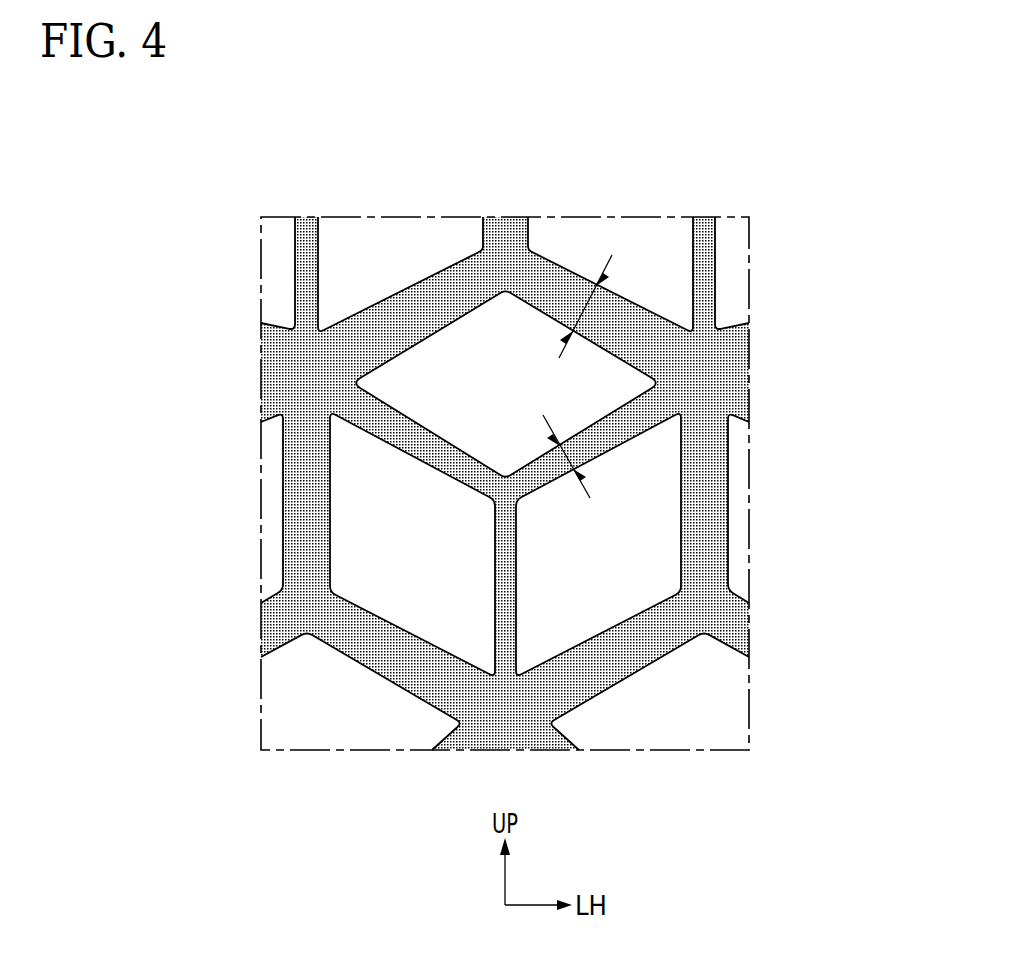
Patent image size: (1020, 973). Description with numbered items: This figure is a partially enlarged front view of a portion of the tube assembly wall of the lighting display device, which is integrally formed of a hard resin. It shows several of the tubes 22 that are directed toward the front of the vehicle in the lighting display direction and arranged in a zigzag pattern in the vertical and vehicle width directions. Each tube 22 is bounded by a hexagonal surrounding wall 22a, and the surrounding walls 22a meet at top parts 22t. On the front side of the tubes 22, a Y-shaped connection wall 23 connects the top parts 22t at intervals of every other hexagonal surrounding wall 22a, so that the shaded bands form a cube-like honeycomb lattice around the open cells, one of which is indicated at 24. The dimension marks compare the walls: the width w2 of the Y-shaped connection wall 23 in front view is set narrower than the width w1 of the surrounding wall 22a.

The tube 22 is at (560, 271).
The hexagonal surrounding wall 22a is at (613, 312).
The top part 22t is at (700, 380).
The Y-shaped connection wall 23 is at (598, 436).
The opening / lattice cell 24 is at (408, 300).
The width of the surrounding wall w1 is at (640, 318).
The width of the Y-shaped connection wall w2 is at (610, 434).